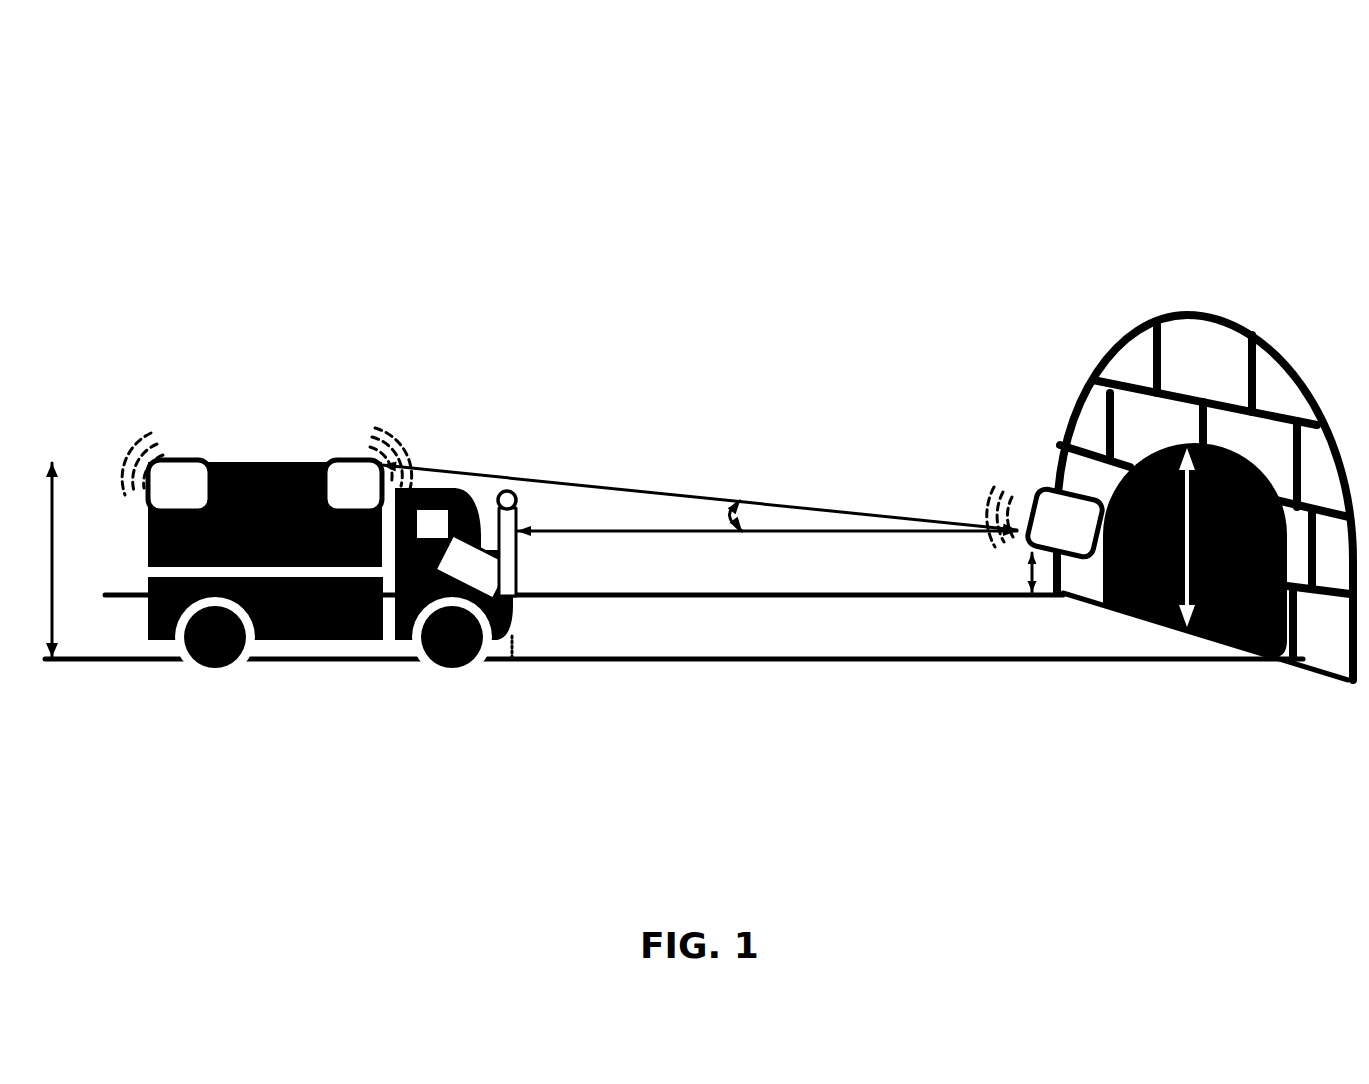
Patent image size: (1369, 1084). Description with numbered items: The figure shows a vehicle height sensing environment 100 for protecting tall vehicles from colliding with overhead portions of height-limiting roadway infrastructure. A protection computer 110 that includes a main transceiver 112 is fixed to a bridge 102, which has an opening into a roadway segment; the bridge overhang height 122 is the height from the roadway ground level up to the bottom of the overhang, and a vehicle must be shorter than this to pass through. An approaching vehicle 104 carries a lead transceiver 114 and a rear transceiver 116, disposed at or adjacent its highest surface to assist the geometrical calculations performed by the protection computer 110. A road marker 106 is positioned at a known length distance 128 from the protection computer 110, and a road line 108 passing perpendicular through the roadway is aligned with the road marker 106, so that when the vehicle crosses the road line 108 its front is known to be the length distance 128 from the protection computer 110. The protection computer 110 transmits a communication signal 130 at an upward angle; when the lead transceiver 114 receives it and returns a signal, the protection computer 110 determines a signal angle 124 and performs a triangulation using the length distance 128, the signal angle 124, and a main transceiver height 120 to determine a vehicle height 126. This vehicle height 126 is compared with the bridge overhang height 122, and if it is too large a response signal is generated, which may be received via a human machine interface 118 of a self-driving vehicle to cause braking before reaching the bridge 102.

The vehicle height sensing environment 100 is at (1225, 127).
The bridge 102 is at (1313, 633).
The approaching vehicle 104 is at (323, 622).
The road marker 106 is at (543, 508).
The road line 108 is at (512, 638).
The protection computer 110 is at (1045, 535).
The main transceiver 112 is at (1033, 505).
The lead transceiver 114 is at (375, 502).
The rear transceiver 116 is at (200, 502).
The human machine interface 118 is at (453, 579).
The main transceiver height 120 is at (1028, 573).
The bridge overhang height 122 is at (1183, 547).
The signal angle 124 is at (726, 515).
The vehicle height 126 is at (53, 567).
The length distance 128 is at (785, 533).
The 5G NR communication signal 130 is at (600, 482).